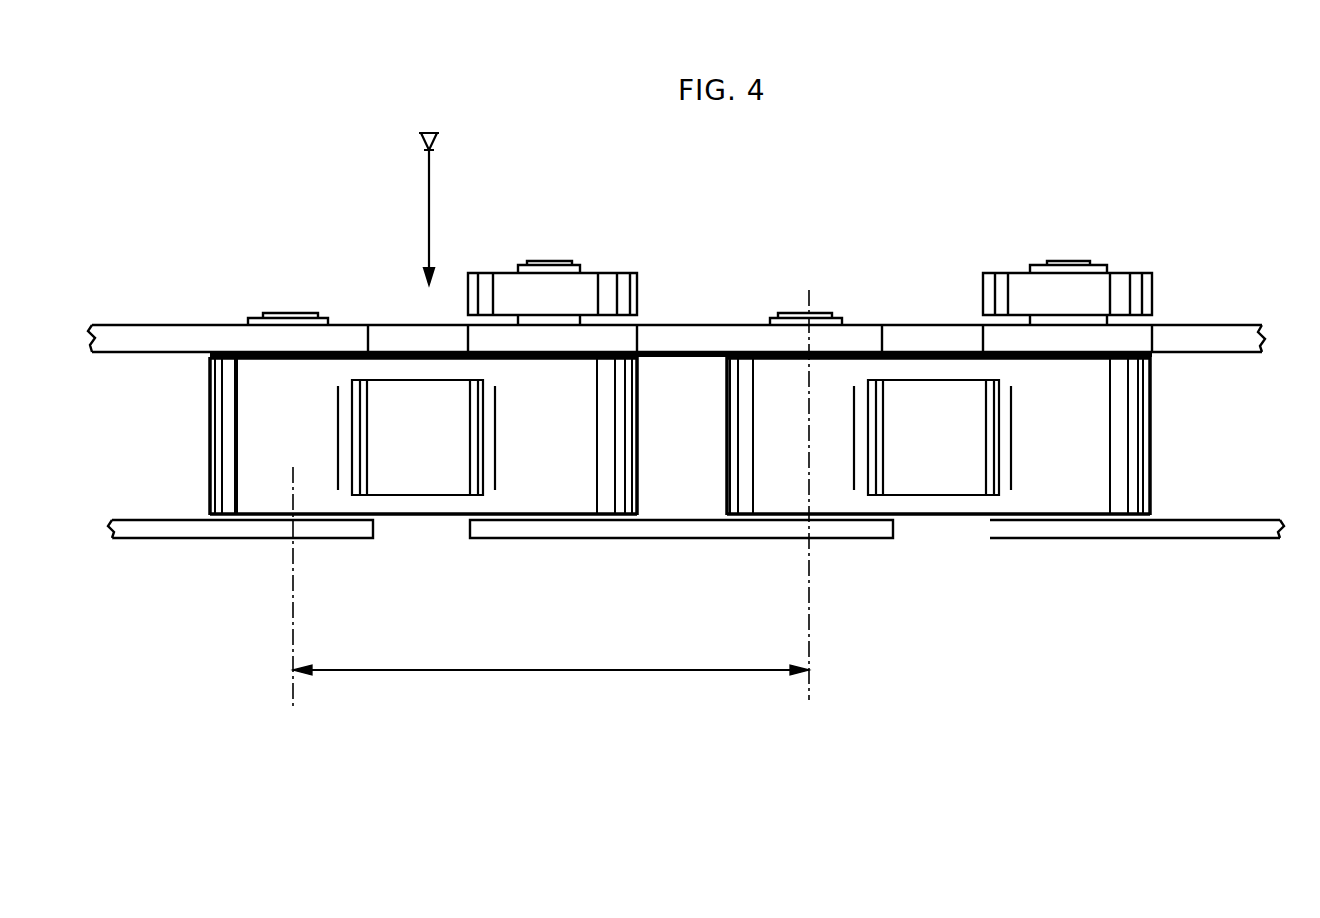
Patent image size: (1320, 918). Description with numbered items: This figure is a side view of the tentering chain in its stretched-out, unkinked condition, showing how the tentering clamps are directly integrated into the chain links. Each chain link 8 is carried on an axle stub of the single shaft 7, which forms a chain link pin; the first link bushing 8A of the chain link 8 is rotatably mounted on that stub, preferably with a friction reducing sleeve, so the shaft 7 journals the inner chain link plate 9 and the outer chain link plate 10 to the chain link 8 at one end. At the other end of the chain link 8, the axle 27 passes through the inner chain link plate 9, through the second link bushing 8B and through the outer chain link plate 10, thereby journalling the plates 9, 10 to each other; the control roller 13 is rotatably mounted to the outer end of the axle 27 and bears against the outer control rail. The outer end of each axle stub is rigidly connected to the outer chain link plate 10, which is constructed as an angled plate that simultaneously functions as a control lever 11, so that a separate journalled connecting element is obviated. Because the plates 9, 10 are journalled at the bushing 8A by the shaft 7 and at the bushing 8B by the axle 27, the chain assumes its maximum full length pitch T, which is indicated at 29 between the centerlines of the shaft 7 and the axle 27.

The single shaft 7 is at (288, 318).
The chain link 8 is at (411, 503).
The first link bushing 8A is at (235, 438).
The second link bushing 8B is at (610, 497).
The inner chain link plate 9 is at (236, 525).
The outer chain link plate 10 is at (155, 335).
The control lever 11 is at (407, 340).
The control roller 13 is at (612, 290).
The axle 27 is at (548, 265).
The pitch dimension indication 29 is at (553, 670).